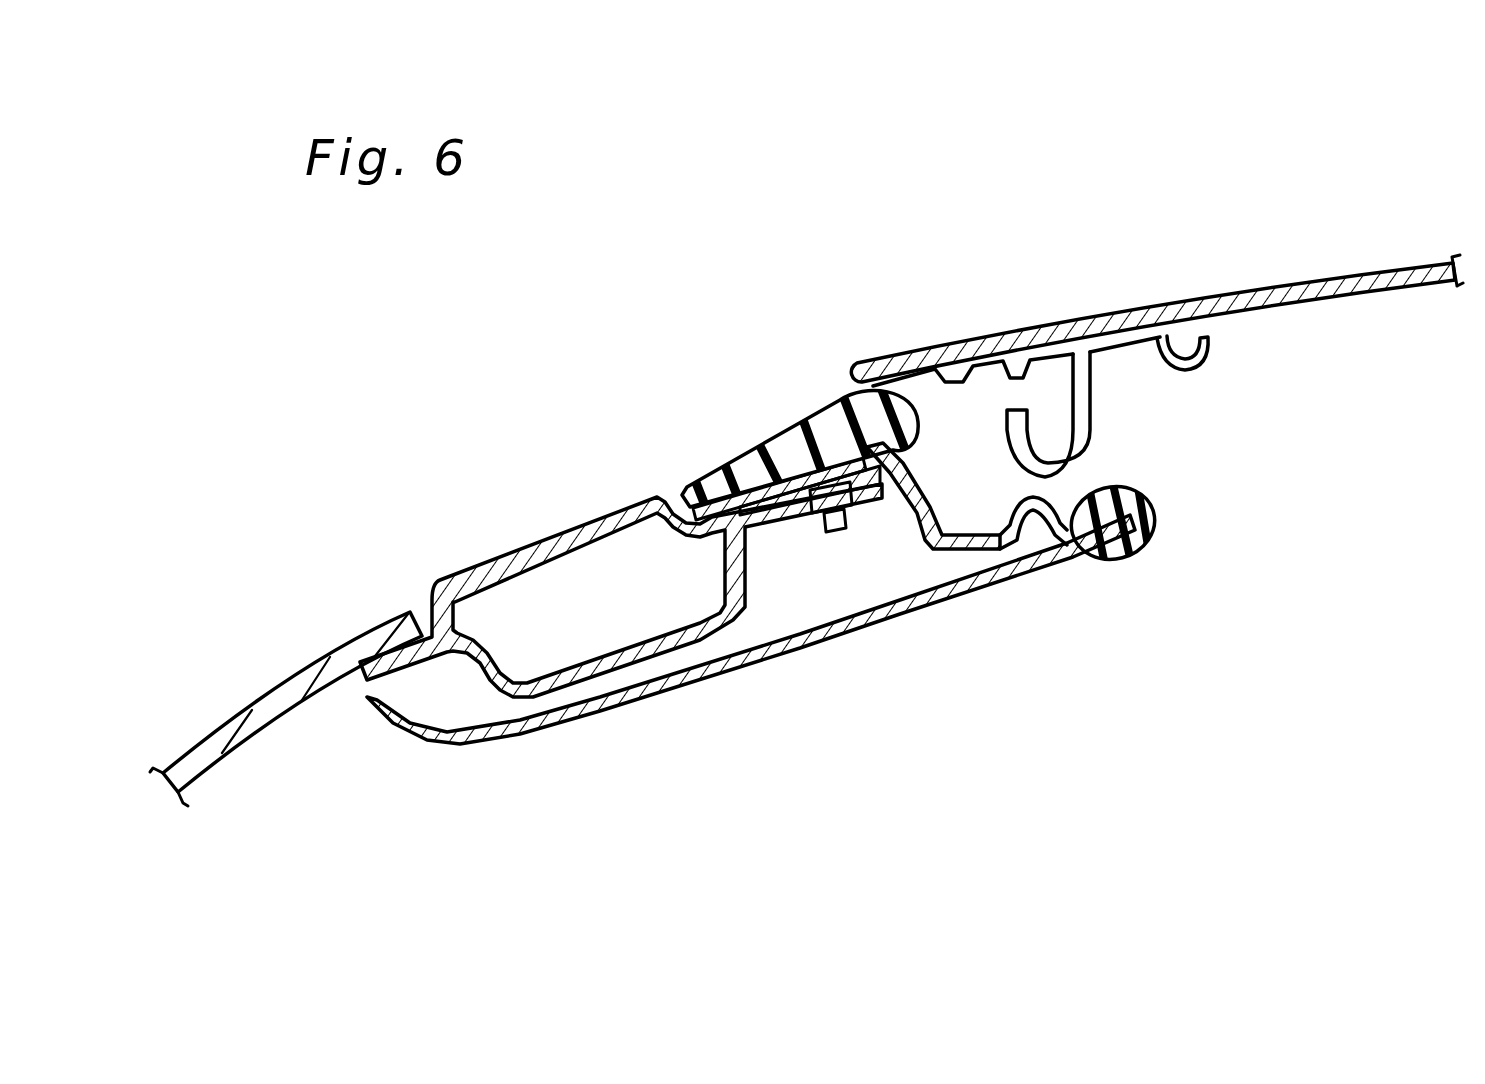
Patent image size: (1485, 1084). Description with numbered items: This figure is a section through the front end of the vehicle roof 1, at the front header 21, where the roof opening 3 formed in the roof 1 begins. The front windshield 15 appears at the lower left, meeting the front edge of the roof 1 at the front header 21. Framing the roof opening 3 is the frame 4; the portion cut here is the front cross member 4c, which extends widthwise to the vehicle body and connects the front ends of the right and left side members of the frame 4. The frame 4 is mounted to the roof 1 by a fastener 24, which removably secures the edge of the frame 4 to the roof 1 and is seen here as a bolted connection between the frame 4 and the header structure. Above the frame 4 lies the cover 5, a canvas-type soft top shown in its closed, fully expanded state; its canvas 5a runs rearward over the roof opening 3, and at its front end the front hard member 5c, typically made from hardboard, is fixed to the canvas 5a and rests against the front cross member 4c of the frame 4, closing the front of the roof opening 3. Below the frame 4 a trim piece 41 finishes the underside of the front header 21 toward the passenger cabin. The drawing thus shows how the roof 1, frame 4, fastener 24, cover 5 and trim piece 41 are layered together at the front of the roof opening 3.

The vehicle roof 1 is at (621, 559).
The front header 21 is at (786, 489).
The roof opening 3 is at (1320, 440).
The frame 4 is at (1015, 559).
The front cross member 4c is at (1033, 523).
The cover 5 is at (1157, 324).
The canvas 5a is at (1040, 361).
The front hard member 5c is at (1027, 345).
The front windshield 15 is at (250, 712).
The fastener 24 is at (810, 512).
The trim piece 41 is at (681, 685).